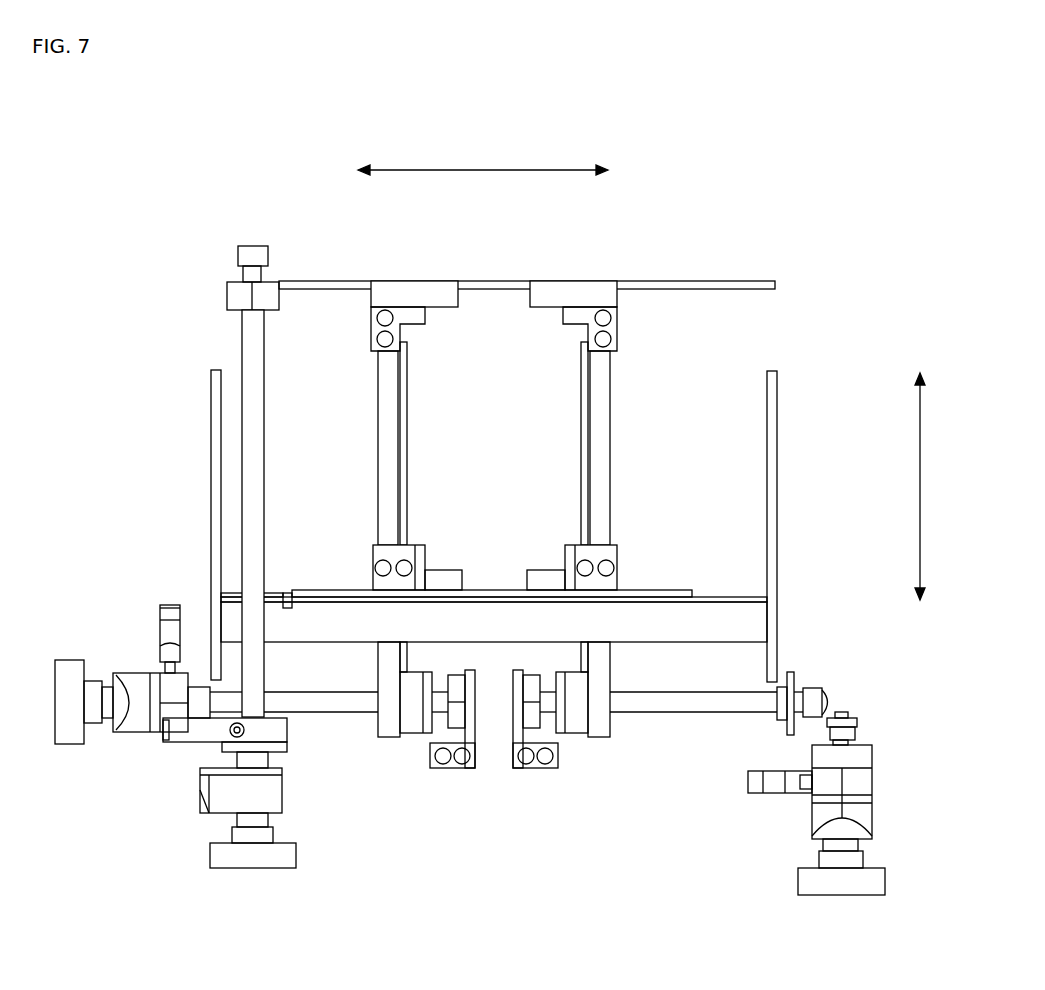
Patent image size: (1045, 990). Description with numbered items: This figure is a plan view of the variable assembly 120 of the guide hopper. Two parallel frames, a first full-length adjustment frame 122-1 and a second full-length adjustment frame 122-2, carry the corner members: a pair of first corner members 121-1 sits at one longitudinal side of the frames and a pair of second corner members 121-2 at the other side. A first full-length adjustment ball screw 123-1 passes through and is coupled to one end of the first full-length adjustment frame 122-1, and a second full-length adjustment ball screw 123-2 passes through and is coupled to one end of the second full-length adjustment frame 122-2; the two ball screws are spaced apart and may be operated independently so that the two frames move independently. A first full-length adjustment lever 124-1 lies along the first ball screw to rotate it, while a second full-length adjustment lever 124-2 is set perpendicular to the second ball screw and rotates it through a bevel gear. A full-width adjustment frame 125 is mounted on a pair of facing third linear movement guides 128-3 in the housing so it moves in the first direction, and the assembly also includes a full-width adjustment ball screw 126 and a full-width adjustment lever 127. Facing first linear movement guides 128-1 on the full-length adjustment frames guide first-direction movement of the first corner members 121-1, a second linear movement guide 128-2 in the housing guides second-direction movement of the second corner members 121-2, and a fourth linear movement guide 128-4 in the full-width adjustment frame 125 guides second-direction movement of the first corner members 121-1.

The variable assembly 120 is at (195, 131).
The first corner members 121-1 is at (567, 551).
The second corner members 121-2 is at (585, 293).
The first full-length adjustment frame 122-1 is at (384, 437).
The second full-length adjustment frame 122-2 is at (609, 437).
The first full-length adjustment ball screw 123-1 is at (360, 712).
The second full-length adjustment ball screw 123-2 is at (662, 712).
The first full-length adjustment lever 124-1 is at (72, 742).
The second full-length adjustment lever 124-2 is at (828, 895).
The full-width adjustment frame 125 is at (743, 643).
The full-width adjustment ball screw 126 is at (247, 333).
The full-width adjustment lever 127 is at (258, 868).
The first linear movement guide 128-1 is at (580, 446).
The second linear movement guide 128-2 is at (685, 283).
The third linear movement guide 128-3 is at (215, 462).
The fourth linear movement guide 128-4 is at (678, 589).